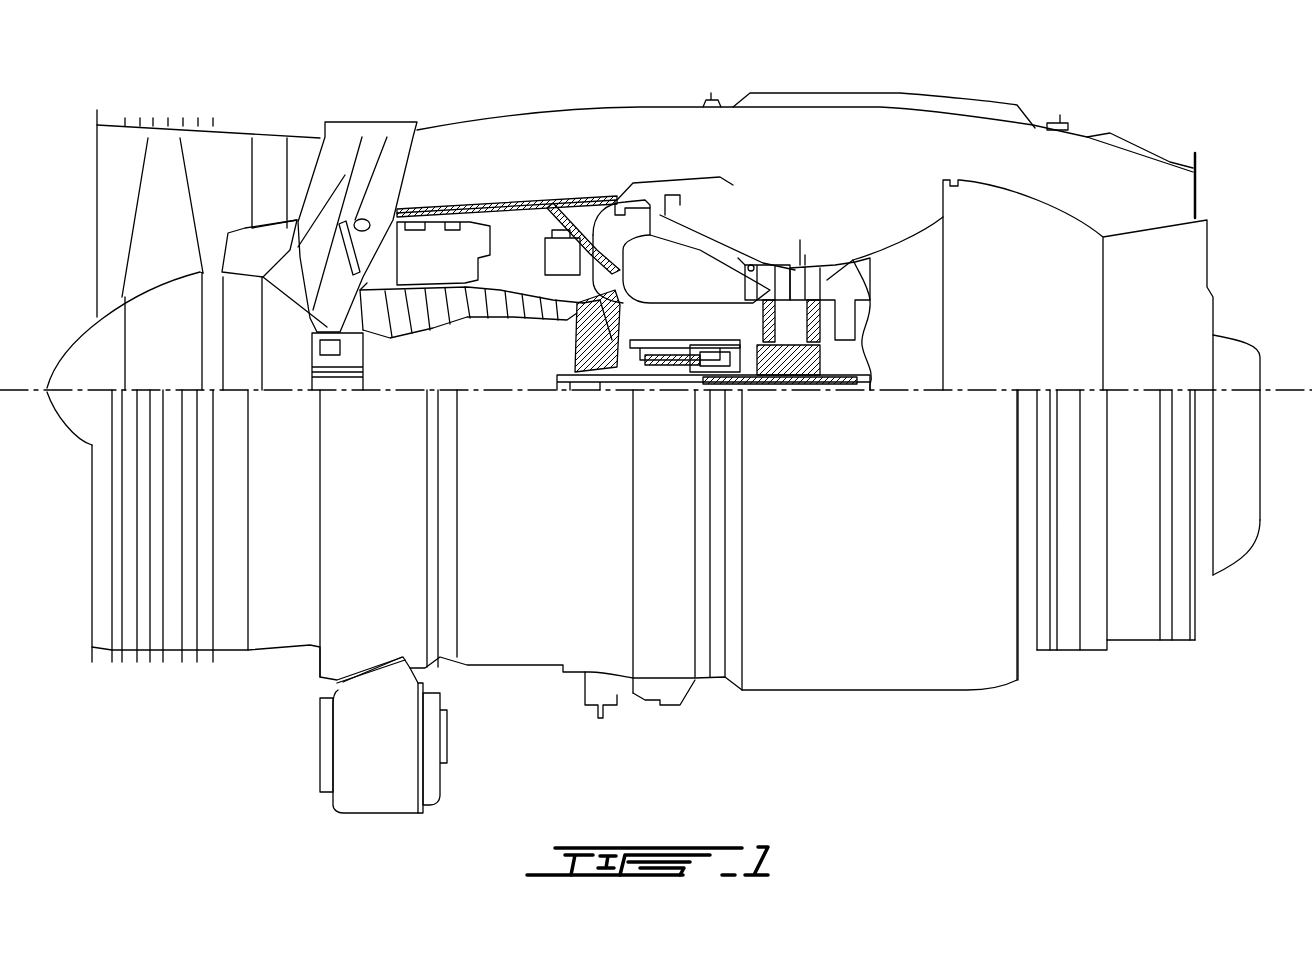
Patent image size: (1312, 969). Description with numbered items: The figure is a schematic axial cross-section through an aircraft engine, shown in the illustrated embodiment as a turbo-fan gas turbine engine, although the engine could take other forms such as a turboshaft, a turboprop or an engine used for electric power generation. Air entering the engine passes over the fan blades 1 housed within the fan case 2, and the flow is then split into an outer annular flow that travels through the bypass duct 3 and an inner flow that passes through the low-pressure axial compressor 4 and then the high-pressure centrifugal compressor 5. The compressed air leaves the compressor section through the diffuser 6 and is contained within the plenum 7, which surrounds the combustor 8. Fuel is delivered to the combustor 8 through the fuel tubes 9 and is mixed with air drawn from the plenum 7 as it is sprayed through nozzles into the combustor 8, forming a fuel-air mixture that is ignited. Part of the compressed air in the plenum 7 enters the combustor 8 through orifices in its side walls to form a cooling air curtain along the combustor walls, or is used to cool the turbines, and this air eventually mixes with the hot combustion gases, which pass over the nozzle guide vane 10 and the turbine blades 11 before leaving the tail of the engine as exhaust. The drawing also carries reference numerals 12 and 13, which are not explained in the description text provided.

The fan blades 1 is at (172, 237).
The fan case 2 is at (222, 125).
The bypass duct 3 is at (492, 173).
The low-pressure axial compressor 4 is at (407, 330).
The high-pressure centrifugal compressor 5 is at (570, 318).
The diffuser 6 is at (628, 217).
The plenum 7 is at (700, 260).
The combustor 8 is at (670, 290).
The fuel tubes 9 is at (695, 210).
The nozzle guide vane 10 is at (762, 280).
The turbine blades 11 is at (770, 345).
The shaft 12 is at (690, 345).
The bearing support 13 is at (765, 355).